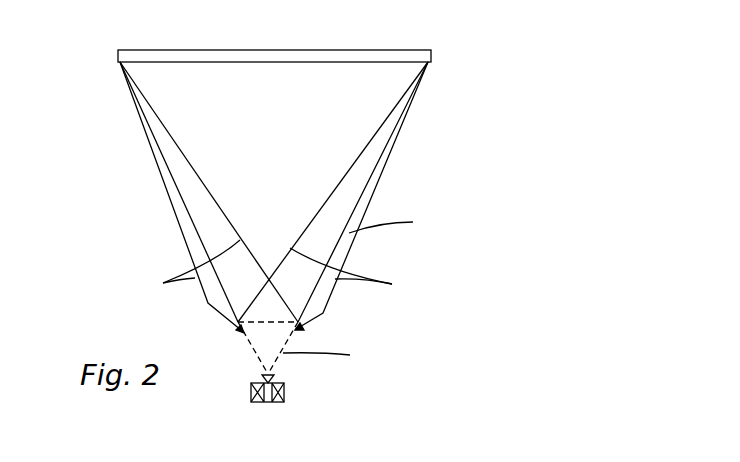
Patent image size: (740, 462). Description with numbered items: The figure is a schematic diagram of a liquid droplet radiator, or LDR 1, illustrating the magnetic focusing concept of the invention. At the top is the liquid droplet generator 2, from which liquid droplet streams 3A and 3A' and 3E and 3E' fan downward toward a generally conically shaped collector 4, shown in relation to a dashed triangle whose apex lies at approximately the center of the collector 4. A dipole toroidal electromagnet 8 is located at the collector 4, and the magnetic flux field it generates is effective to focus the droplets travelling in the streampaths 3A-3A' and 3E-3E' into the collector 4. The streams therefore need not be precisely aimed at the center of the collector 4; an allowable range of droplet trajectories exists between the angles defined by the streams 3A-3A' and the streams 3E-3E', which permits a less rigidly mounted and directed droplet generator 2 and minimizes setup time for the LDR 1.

The LDR 1 is at (377, 49).
The liquid droplet generator 2 is at (432, 53).
The liquid droplet stream 3A is at (369, 196).
The liquid droplet stream 3A' is at (333, 192).
The liquid droplet stream 3E is at (172, 197).
The liquid droplet stream 3E' is at (209, 192).
The collector 4 is at (277, 380).
The dipole toroidal electromagnet 8 is at (286, 395).